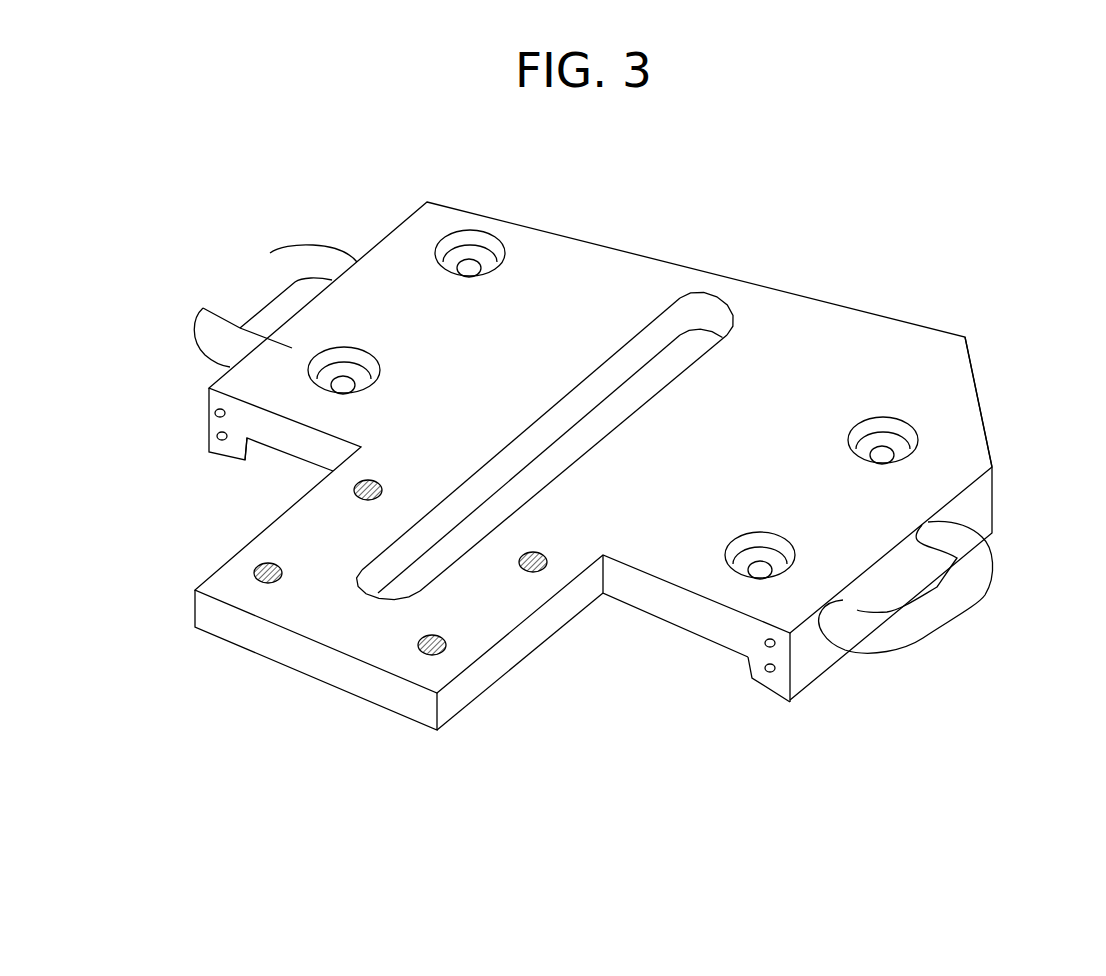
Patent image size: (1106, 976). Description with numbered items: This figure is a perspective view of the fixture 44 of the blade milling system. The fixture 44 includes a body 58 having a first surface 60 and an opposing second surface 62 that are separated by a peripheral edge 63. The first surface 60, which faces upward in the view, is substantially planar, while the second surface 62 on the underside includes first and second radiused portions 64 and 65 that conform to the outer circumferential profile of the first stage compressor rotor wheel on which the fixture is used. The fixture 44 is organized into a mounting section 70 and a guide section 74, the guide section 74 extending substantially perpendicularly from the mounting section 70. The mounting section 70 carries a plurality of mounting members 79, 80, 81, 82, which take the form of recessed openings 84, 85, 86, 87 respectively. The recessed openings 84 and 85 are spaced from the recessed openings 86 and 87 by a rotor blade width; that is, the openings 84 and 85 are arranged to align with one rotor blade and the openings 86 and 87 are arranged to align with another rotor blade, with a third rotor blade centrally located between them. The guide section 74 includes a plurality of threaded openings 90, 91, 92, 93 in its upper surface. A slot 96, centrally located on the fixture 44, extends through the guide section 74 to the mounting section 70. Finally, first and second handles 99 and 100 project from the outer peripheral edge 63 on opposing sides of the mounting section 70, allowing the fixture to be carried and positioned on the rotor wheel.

The fixture 44 is at (686, 755).
The body 58 is at (196, 391).
The first surface 60 is at (574, 238).
The second surface 62 is at (708, 637).
The peripheral edge 63 is at (281, 436).
The first radiused portion 64 is at (210, 452).
The second radiused portion 65 is at (767, 688).
The mounting section 70 is at (1008, 332).
The guide section 74 is at (540, 708).
The mounting member 79 is at (447, 210).
The mounting member 80 is at (300, 350).
The mounting member 81 is at (937, 424).
The mounting member 82 is at (787, 596).
The recessed opening 84 is at (497, 265).
The recessed opening 85 is at (380, 369).
The recessed opening 86 is at (866, 425).
The recessed opening 87 is at (760, 538).
The threaded opening 90 is at (355, 497).
The threaded opening 91 is at (257, 583).
The threaded opening 92 is at (533, 575).
The threaded opening 93 is at (430, 658).
The slot 96 is at (691, 338).
The first handle 99 is at (255, 290).
The second handle 100 is at (940, 612).